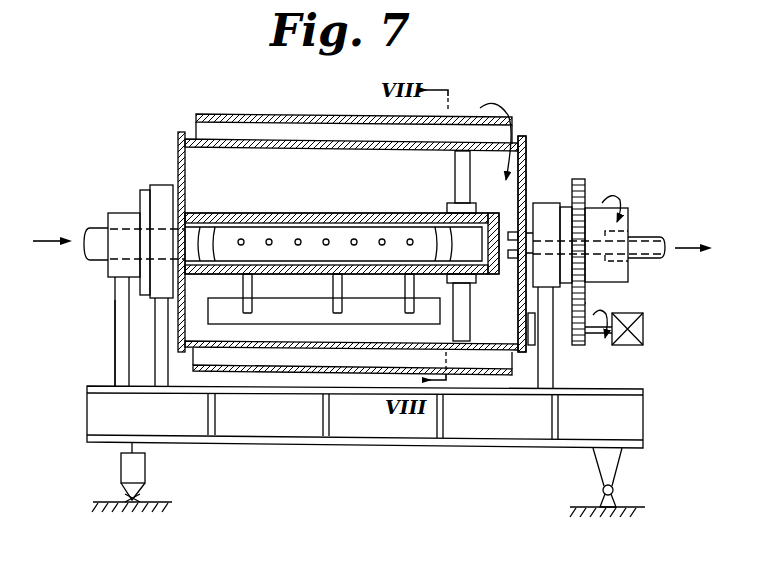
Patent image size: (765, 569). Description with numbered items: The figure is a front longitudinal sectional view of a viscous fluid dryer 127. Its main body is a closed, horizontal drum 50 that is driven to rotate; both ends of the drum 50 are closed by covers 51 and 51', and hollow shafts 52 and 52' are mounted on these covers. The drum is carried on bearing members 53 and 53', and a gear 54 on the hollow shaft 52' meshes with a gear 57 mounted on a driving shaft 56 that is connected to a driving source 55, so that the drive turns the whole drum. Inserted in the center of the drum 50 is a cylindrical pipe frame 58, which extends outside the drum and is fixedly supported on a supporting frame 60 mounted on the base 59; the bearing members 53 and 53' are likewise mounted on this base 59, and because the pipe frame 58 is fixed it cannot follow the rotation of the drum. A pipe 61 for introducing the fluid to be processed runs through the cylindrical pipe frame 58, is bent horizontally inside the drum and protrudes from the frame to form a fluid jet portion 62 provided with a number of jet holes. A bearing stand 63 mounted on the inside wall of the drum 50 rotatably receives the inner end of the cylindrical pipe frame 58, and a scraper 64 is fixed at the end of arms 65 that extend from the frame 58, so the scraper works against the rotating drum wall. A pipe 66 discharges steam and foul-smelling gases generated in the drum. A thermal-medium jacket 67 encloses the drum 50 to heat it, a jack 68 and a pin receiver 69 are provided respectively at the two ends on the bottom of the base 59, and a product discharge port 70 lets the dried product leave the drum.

The drum 50 is at (535, 140).
The cover 51 is at (156, 238).
The cover 51' is at (553, 240).
The hollow shaft 52 is at (140, 229).
The hollow shaft 52' is at (628, 231).
The bearing member 53 is at (112, 331).
The bearing member 53' is at (564, 315).
The gear 54 is at (575, 180).
The driving source 55 is at (643, 333).
The driving shaft 56 is at (593, 338).
The gear 57 is at (585, 303).
The cylindrical pipe frame 58 is at (322, 213).
The base 59 is at (272, 442).
The supporting frame 60 is at (115, 368).
The pipe 61 is at (98, 228).
The fluid jet portion 62 is at (388, 234).
The bearing stand 63 is at (470, 335).
The scraper 64 is at (360, 327).
The arms 65 is at (342, 292).
The pipe 66 is at (660, 237).
The thermal-medium jacket 67 is at (243, 113).
The jack 68 is at (147, 470).
The pin receiver 69 is at (614, 478).
The product discharge port 70 is at (530, 345).
The viscous fluid dryer 127 is at (522, 131).